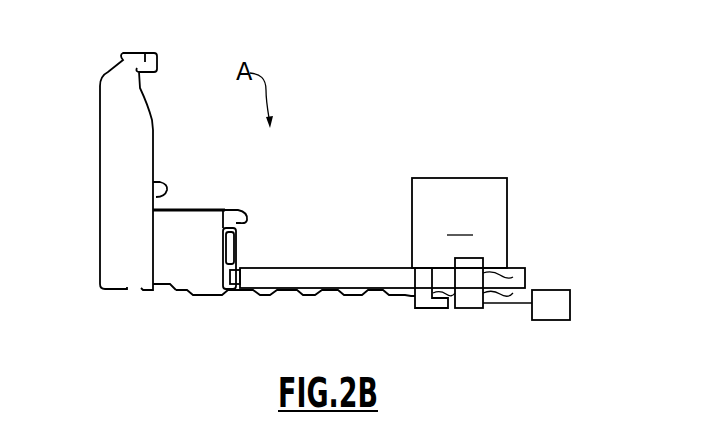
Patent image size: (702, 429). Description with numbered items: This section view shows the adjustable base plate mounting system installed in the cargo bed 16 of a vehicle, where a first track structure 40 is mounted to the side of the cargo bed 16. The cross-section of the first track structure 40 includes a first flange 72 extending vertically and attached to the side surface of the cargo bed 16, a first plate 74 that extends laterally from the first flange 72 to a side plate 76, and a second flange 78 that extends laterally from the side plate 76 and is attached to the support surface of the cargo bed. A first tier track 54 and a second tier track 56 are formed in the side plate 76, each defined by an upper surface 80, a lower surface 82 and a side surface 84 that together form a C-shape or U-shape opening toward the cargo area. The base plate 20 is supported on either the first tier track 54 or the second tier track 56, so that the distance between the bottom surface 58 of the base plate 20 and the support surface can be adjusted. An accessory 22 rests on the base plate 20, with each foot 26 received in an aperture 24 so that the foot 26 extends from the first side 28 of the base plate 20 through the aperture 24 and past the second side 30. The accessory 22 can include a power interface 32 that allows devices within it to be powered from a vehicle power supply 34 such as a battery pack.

The cargo bed 16 is at (152, 153).
The first flange 72 is at (153, 184).
The first track structure 40 is at (187, 186).
The first plate 74 is at (203, 208).
The side plate 76 is at (223, 221).
The upper surface 80 is at (236, 216).
The side surface 84 is at (244, 220).
The lower surface 82 is at (224, 229).
The first tier track 54 is at (248, 259).
The second tier track 56 is at (246, 222).
The second flange 78 is at (236, 286).
The base plate 20 is at (323, 262).
The first side 28 is at (345, 267).
The bottom surface 58 is at (264, 296).
The second side 30 is at (378, 294).
The accessory/module 22 is at (459, 223).
The aperture 24 is at (415, 276).
The foot 26 is at (434, 309).
The power interface 32 is at (505, 278).
The vehicle power supply 34 is at (570, 303).